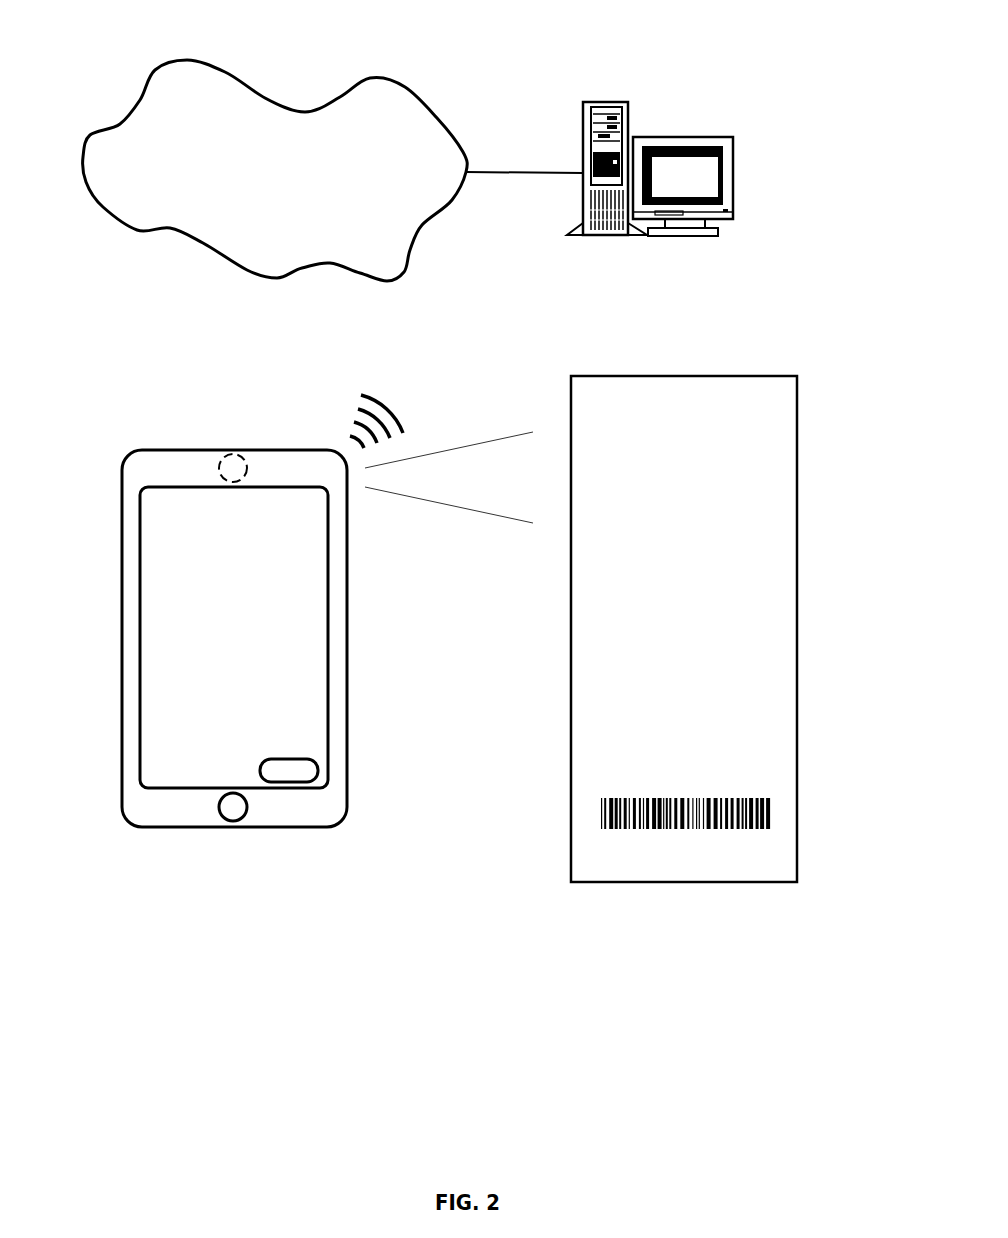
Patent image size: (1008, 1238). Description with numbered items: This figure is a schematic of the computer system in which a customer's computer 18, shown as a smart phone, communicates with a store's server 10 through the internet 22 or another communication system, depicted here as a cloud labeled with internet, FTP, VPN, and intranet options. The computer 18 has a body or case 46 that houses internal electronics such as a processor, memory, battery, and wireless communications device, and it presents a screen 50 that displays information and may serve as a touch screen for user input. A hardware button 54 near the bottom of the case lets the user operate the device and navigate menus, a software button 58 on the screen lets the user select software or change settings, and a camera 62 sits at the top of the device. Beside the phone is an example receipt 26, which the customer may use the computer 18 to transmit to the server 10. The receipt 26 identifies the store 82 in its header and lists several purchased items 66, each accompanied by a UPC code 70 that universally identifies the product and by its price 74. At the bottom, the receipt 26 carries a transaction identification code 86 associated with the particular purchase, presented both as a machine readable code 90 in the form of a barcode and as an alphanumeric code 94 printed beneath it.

The server 10 is at (730, 104).
The computer 18 is at (235, 595).
The internet 22 is at (397, 46).
The receipt 26 is at (673, 584).
The body or case 46 is at (133, 563).
The screen 50 is at (148, 638).
The hardware buttons 54 is at (224, 800).
The software buttons 58 is at (310, 755).
The camera 62 is at (230, 446).
The items 66 is at (589, 459).
The UPC code 70 is at (785, 482).
The price 74 is at (785, 443).
The store 82 is at (621, 388).
The transaction identification code 86 is at (784, 801).
The machine readable code 90 is at (589, 804).
The alphanumeric code 94 is at (607, 843).